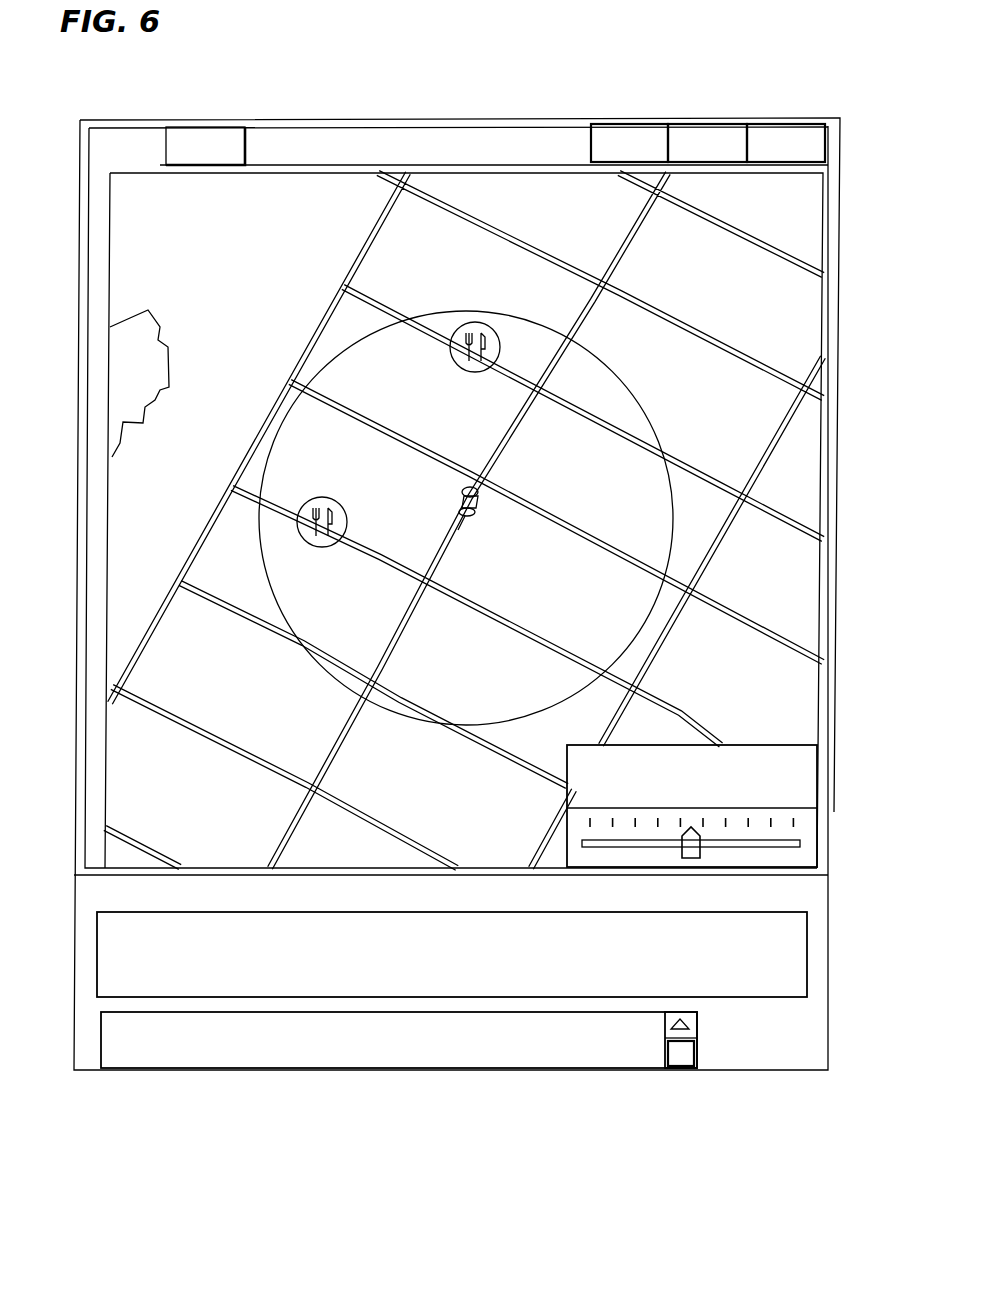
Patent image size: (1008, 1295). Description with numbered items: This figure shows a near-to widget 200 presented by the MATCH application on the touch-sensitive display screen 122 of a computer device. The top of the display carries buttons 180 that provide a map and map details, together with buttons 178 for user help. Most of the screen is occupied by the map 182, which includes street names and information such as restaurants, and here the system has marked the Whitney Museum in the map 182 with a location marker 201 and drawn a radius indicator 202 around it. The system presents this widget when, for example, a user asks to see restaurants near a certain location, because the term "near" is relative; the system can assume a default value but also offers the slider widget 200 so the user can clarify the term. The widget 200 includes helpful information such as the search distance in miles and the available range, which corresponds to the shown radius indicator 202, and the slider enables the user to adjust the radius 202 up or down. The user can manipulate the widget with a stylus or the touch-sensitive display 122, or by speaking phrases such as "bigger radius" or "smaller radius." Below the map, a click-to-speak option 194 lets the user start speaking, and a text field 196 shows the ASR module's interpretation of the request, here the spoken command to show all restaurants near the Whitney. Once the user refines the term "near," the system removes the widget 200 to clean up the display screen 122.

The display screen 122 is at (838, 560).
The buttons for user help 178 is at (797, 128).
The buttons that provide a map and map details 180 is at (128, 134).
The image 182 is at (233, 577).
The click-to-speak option 194 is at (792, 948).
The text field 196 is at (160, 1060).
The near-to widget 200 is at (812, 825).
The location marker 201 is at (470, 490).
The radius indicator 202 is at (645, 624).